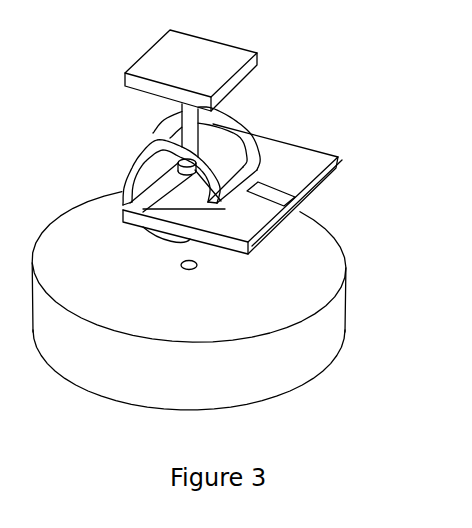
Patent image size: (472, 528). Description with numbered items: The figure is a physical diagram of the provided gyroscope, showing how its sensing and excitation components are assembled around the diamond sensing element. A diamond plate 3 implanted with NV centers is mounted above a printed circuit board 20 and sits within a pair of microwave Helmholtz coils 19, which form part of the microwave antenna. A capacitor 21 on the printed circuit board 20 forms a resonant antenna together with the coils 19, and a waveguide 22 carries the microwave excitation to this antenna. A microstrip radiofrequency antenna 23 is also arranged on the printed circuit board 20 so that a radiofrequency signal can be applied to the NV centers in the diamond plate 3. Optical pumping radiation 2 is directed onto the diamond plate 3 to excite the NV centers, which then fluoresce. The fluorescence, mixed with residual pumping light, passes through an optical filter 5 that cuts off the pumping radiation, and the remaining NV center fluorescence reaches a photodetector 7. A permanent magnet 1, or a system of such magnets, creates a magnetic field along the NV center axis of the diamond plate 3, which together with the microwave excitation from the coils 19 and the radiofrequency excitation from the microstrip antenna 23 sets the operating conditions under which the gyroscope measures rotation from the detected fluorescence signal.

The permanent magnet 1 is at (307, 308).
The optical pumping radiation 2 is at (194, 128).
The diamond plate 3 is at (192, 166).
The optical filter 5 is at (196, 117).
The photodetector 7 is at (217, 66).
The microwave Helmholtz coils 19 is at (199, 145).
The printed circuit board 20 is at (337, 157).
The capacitor 21 is at (250, 181).
The waveguide 22 is at (277, 193).
The microstrip radiofrequency antenna 23 is at (225, 209).